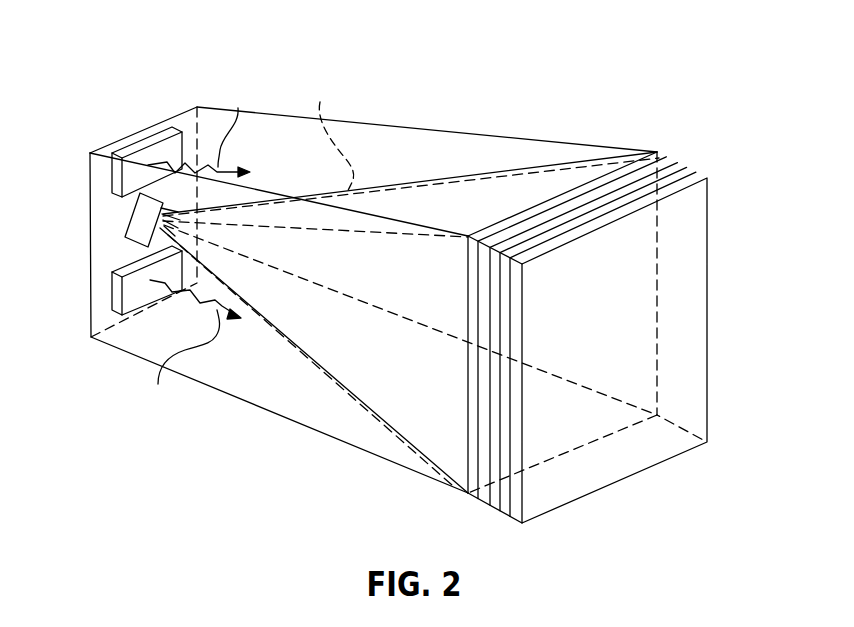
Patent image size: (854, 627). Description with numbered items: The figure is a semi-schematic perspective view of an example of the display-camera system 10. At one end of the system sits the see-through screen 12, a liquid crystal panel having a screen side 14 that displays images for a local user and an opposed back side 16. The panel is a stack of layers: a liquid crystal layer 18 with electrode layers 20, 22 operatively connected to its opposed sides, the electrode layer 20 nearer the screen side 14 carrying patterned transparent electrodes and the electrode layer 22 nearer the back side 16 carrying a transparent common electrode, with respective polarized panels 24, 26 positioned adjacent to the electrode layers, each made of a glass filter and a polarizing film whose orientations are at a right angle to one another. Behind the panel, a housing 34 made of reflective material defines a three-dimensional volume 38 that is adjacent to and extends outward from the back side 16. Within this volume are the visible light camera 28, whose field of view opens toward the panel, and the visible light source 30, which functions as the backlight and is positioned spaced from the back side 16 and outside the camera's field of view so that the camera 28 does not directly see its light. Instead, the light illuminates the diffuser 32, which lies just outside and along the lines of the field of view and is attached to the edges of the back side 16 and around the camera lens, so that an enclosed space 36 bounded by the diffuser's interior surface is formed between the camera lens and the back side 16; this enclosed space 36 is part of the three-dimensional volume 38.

The display-camera system 10 is at (633, 97).
The see-through screen 12 is at (584, 308).
The screen side 14 is at (630, 243).
The back side 16 is at (468, 397).
The liquid crystal layer 18 is at (628, 190).
The electrode layer 20 is at (482, 262).
The electrode layer 22 is at (573, 207).
The polarized panel 24 is at (490, 302).
The polarized panel 26 is at (515, 217).
The visible light camera 28 is at (142, 217).
The visible light source 30 is at (132, 153).
The diffuser 32 is at (387, 187).
The housing 34 is at (258, 130).
The enclosed space 36 is at (328, 273).
The three-dimensional volume 38 is at (235, 374).